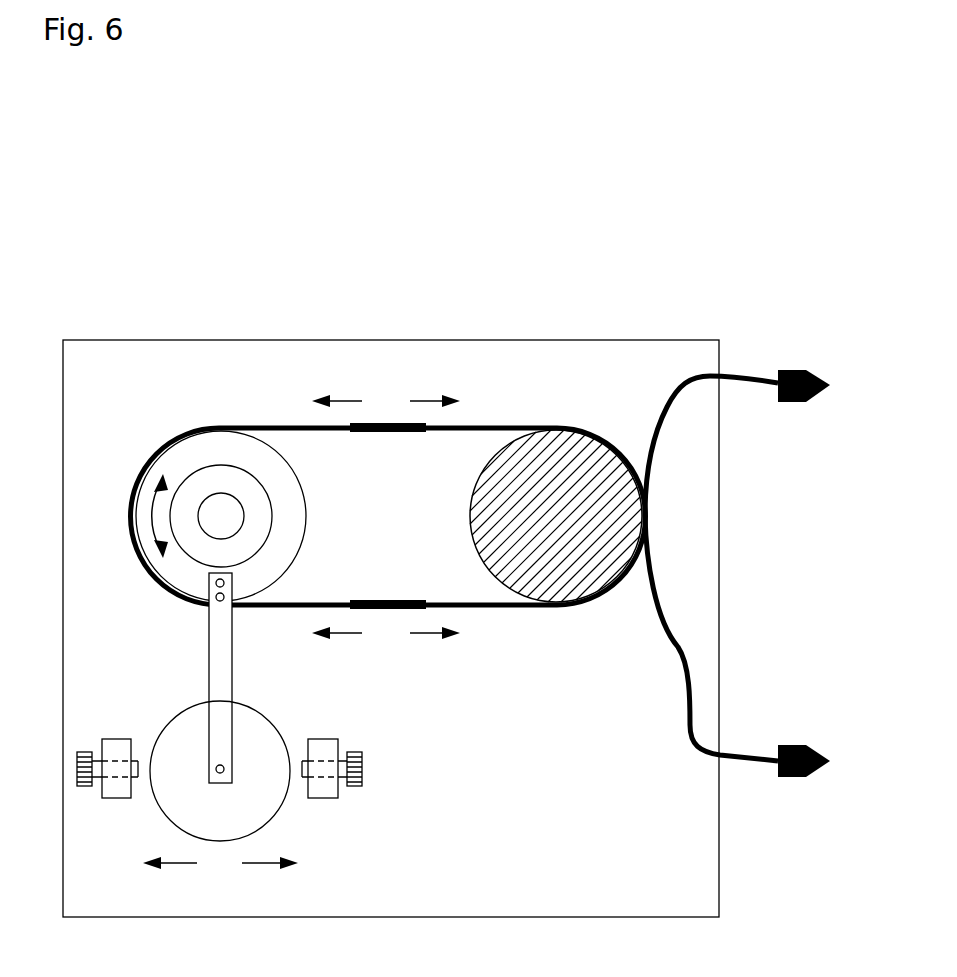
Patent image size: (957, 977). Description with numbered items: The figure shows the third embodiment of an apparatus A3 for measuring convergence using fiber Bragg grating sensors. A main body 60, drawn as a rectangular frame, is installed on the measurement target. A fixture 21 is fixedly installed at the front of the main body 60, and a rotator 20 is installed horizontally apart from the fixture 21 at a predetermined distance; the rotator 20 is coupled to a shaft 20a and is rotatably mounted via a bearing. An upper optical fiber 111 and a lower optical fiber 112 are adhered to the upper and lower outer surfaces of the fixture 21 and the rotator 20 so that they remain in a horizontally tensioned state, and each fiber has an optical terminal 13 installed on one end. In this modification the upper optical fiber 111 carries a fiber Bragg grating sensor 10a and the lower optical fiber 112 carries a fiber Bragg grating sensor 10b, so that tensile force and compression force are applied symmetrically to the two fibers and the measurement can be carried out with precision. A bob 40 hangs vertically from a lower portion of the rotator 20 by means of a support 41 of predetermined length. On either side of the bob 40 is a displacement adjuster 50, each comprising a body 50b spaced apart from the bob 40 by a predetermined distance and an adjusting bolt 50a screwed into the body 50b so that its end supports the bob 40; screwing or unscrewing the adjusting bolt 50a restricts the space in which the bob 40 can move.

The apparatus A3 is at (647, 253).
The upper optical fiber 111 is at (494, 427).
The lower optical fiber 112 is at (494, 607).
The fiber Bragg grating sensor 10a is at (387, 432).
The fiber Bragg grating sensor 10b is at (398, 600).
The rotator 20 is at (280, 547).
The shaft 20a is at (217, 527).
The fixture 21 is at (612, 515).
The optical terminal 13 is at (808, 402).
The bob 40 is at (178, 740).
The support 41 is at (231, 655).
The displacement adjuster 50 is at (353, 797).
The adjusting bolt 50a is at (368, 762).
The body 50b is at (328, 800).
The main body 60 is at (685, 833).